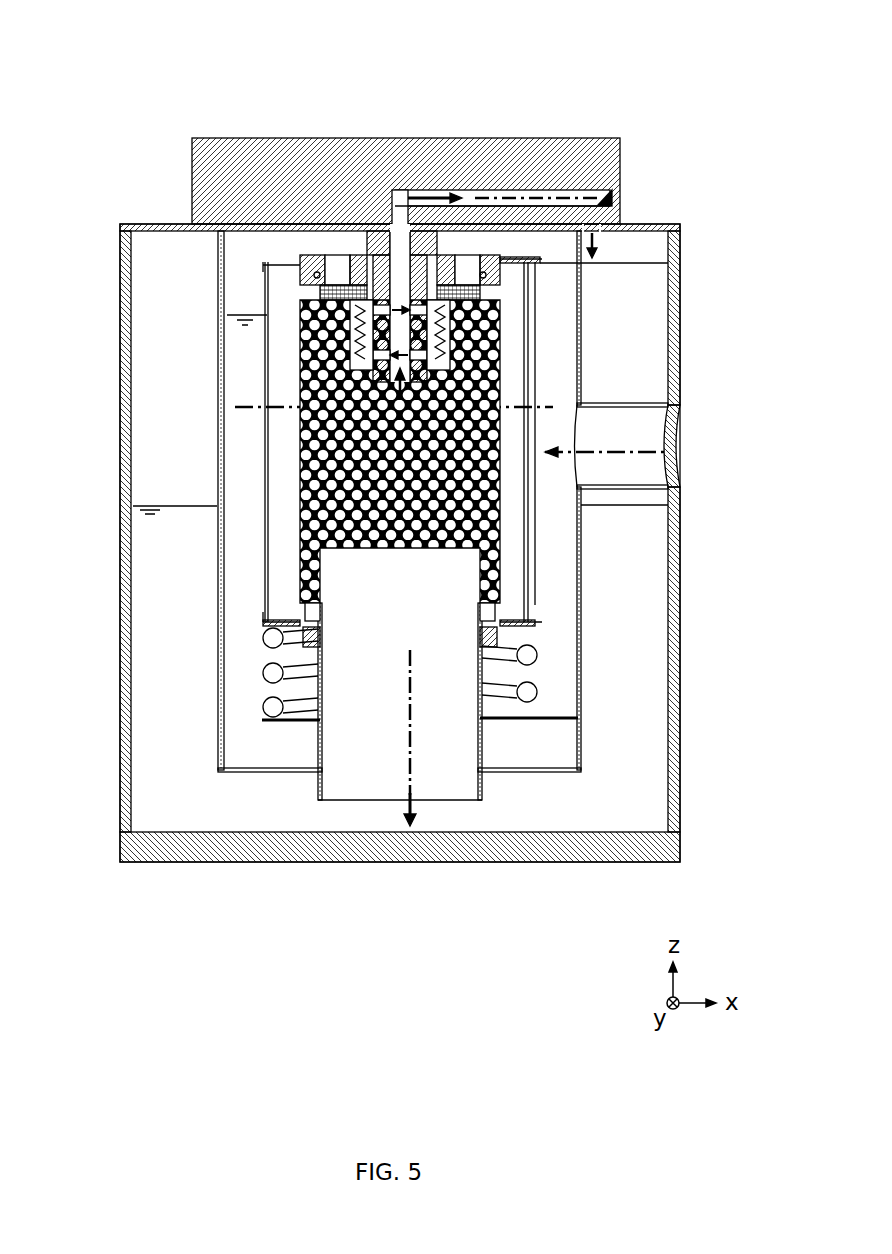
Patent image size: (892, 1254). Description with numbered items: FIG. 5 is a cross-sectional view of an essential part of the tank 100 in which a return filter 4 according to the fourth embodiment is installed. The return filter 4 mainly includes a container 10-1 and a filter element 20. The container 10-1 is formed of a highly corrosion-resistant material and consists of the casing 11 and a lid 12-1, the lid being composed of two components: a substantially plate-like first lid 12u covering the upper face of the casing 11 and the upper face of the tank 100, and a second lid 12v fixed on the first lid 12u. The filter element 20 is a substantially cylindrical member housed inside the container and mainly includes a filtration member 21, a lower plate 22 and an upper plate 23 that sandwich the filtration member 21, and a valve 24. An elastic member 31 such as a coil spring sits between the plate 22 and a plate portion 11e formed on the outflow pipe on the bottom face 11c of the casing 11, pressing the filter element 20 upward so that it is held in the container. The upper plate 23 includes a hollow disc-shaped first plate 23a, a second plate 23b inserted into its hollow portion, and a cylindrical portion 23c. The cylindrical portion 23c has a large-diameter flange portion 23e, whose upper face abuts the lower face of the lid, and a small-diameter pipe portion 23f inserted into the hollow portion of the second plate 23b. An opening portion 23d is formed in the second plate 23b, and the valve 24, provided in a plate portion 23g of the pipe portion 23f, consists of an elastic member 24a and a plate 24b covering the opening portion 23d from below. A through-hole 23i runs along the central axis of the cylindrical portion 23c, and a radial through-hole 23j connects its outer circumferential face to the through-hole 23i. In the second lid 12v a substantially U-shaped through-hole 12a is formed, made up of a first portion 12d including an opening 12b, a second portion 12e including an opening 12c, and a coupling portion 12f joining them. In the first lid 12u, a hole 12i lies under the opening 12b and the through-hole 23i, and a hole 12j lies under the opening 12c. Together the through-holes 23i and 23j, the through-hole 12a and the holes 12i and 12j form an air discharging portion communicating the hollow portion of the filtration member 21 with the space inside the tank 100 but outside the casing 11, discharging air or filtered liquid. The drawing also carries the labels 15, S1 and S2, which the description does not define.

The tank 100 is at (118, 355).
The return filter 4 is at (688, 207).
The container 10-1 is at (193, 57).
The casing 11 is at (235, 300).
The bottom face 11c is at (243, 768).
The plate portion 11e is at (295, 722).
The lid 12-1 is at (193, 93).
The through-hole 12a is at (677, 95).
The opening 12b is at (440, 190).
The opening 12c is at (620, 220).
The first portion 12d is at (415, 190).
The second portion 12e is at (588, 232).
The coupling portion 12f is at (527, 193).
The hole 12i is at (668, 262).
The hole 12j is at (668, 233).
The first lid 12u is at (222, 262).
The second lid 12v is at (217, 178).
The discharge tube 15 is at (483, 797).
The filter element 20 is at (778, 610).
The filtration member 21 is at (500, 527).
The plate 22 is at (533, 620).
The plate 23 is at (460, 40).
The first plate 23a is at (268, 262).
The second plate 23b is at (307, 255).
The cylindrical portion 23c is at (453, 83).
The opening portion 23d is at (345, 262).
The flange portion 23e is at (383, 300).
The pipe portion 23f is at (395, 262).
The plate portion 23g is at (333, 262).
The through-hole 23i is at (422, 258).
The through-hole 23j is at (372, 235).
The valve 24 is at (740, 493).
The elastic member 24a is at (675, 490).
The plate 24b is at (502, 320).
The elastic member 31 is at (527, 695).
The water level S1 is at (243, 313).
The water level S2 is at (157, 505).